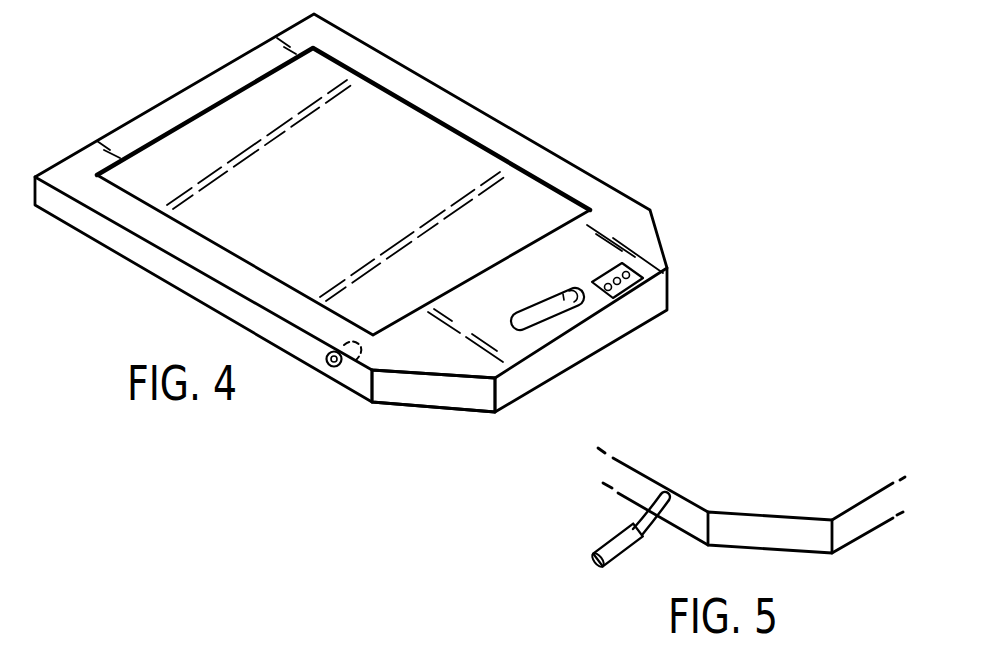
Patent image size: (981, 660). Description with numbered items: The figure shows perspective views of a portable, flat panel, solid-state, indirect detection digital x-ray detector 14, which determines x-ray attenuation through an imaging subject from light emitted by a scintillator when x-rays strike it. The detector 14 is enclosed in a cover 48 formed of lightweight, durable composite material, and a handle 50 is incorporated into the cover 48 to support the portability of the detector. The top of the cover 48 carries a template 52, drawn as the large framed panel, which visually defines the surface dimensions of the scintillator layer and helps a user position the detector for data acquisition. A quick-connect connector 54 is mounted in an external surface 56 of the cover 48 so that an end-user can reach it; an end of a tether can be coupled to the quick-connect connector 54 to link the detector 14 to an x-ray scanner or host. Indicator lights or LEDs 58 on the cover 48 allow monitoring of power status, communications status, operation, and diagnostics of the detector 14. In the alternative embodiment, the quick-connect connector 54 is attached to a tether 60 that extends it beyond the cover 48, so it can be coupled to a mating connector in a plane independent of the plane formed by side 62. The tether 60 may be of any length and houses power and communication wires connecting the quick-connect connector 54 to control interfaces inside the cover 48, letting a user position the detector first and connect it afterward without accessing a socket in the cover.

In FIG. 4, the detector 14 is at (615, 80).
In FIG. 5, the detector 14 is at (843, 420).
In FIG. 4, the cover 48 is at (447, 365).
In FIG. 5, the cover 48 is at (768, 528).
In FIG. 4, the handle 50 is at (540, 312).
In FIG. 4, the template 52 is at (400, 133).
In FIG. 4, the quick-connect connector 54 is at (331, 366).
In FIG. 5, the quick-connect connector 54 is at (593, 566).
In FIG. 4, the external surface 56 is at (152, 268).
In FIG. 4, the indicator lights or LEDs 58 is at (632, 283).
In FIG. 5, the tether 60 is at (642, 518).
In FIG. 5, the side 62 is at (637, 478).